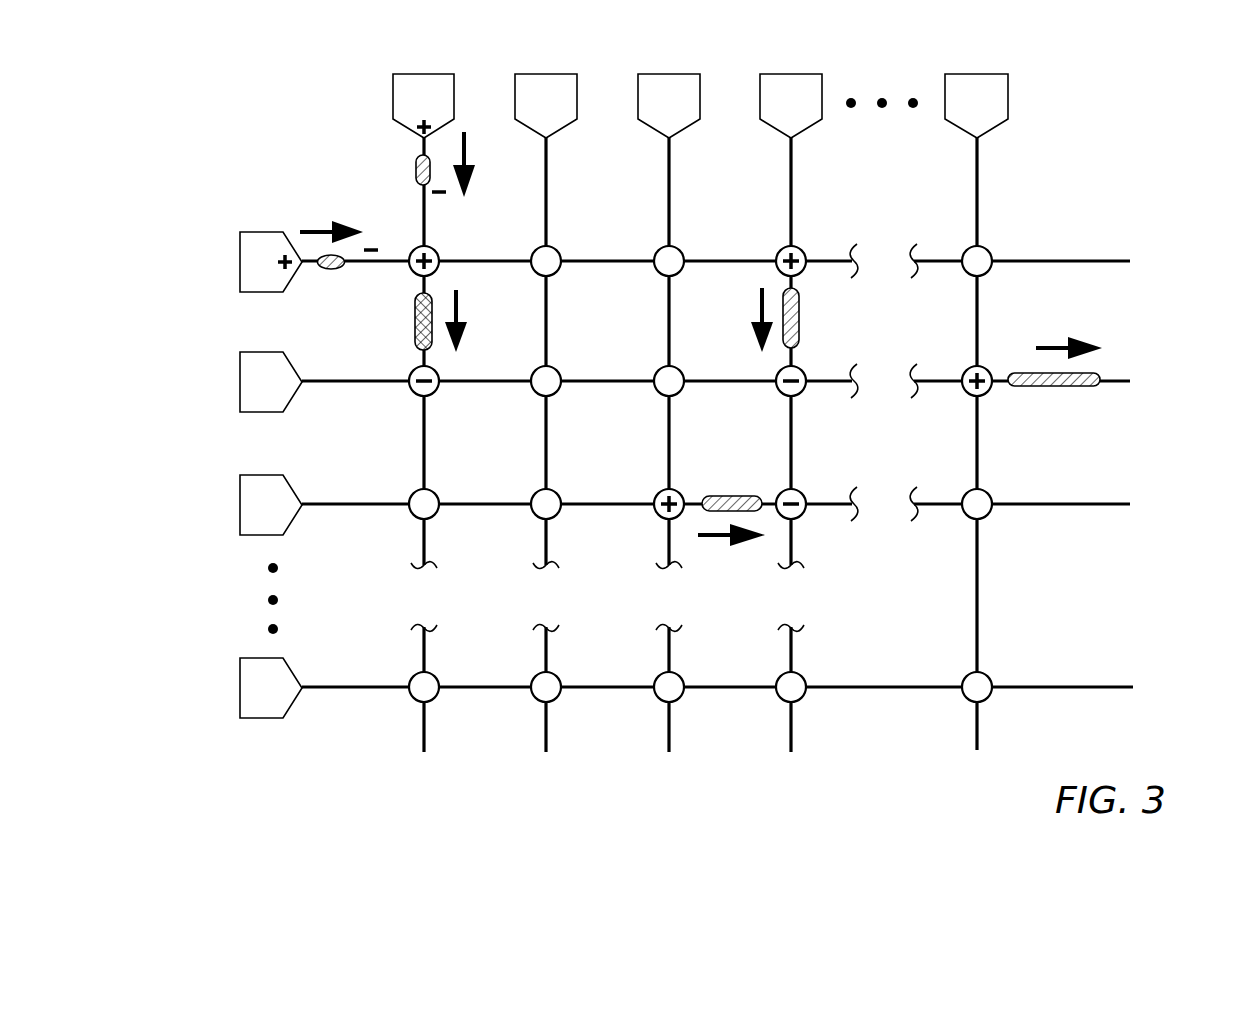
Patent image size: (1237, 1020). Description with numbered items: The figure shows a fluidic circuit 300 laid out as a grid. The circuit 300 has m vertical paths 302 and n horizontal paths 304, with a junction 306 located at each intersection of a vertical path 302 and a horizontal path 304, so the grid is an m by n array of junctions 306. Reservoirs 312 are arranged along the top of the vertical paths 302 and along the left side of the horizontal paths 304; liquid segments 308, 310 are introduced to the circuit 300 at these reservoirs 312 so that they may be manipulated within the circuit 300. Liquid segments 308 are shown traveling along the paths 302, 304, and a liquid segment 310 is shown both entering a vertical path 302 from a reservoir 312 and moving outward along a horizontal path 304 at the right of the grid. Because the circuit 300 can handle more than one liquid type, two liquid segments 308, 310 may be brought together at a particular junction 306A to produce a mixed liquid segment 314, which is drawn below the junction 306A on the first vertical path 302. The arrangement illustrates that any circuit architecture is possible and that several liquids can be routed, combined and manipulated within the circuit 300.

The fluidic circuit 300 is at (1128, 71).
The vertical paths 302 is at (1006, 772).
The horizontal paths 304 is at (1157, 232).
The junctions 306 is at (988, 700).
The junction 306A is at (411, 250).
The liquid segment 308 is at (333, 272).
The liquid segment 310 is at (413, 165).
The reservoirs 312 is at (1006, 47).
The mixed liquid segment 314 is at (415, 322).